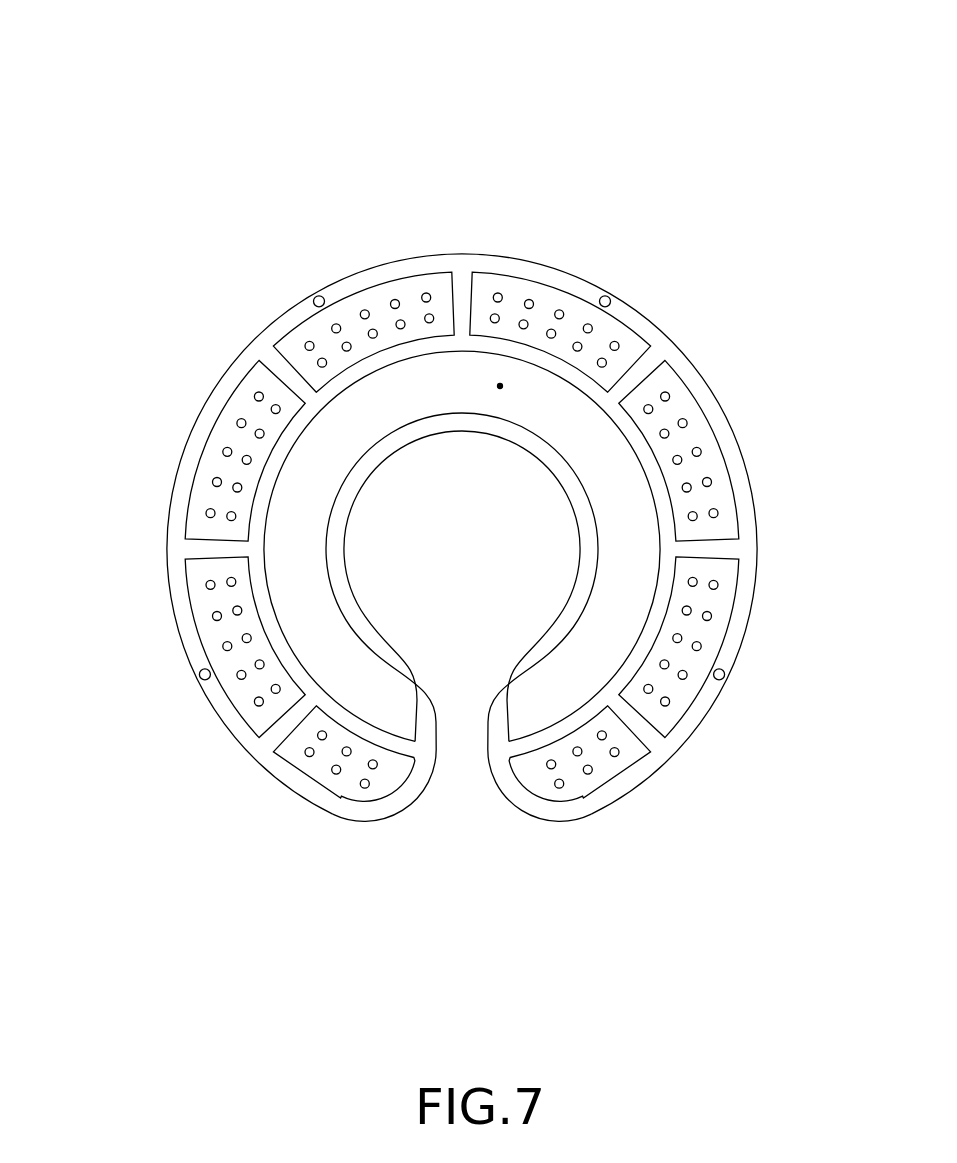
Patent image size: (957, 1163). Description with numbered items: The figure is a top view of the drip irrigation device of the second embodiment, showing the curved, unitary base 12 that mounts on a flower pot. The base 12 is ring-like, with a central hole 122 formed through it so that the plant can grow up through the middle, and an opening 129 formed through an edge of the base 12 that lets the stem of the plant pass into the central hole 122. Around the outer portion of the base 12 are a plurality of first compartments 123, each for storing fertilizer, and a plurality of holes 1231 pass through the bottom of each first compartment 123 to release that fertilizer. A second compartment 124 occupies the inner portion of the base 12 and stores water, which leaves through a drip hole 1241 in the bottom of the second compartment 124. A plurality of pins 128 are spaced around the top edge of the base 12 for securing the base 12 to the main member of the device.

The base 12 is at (653, 140).
The central hole 122 is at (462, 550).
The first compartment 123 is at (206, 582).
The holes 1231 is at (231, 516).
The second compartment 124 is at (596, 652).
The drip hole 1241 is at (500, 386).
The pins 128 is at (726, 672).
The opening 129 is at (465, 762).